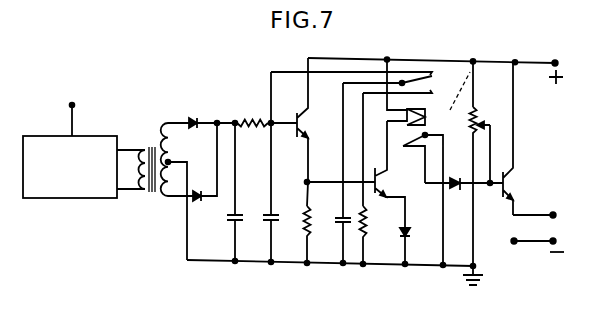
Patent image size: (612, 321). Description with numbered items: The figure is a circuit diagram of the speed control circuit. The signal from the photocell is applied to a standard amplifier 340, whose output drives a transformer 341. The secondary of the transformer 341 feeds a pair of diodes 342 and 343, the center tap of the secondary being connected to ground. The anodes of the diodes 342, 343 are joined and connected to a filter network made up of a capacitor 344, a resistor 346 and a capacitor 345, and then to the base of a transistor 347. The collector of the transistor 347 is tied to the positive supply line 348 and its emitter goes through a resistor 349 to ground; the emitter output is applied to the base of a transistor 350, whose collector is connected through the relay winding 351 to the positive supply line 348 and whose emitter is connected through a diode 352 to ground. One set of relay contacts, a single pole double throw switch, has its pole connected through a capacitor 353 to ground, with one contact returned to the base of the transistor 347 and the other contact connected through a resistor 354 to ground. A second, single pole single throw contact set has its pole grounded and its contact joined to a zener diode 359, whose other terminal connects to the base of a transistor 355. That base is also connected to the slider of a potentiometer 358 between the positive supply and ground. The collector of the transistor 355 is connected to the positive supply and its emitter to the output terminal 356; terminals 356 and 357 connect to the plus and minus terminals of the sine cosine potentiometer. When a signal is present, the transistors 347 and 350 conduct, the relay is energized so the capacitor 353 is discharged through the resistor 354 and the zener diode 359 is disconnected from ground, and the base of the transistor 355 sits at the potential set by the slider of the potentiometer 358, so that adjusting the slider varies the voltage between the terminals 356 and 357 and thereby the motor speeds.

The amplifier 340 is at (67, 198).
The transformer 341 is at (150, 192).
The diode 342 is at (192, 120).
The diode 343 is at (206, 186).
The capacitor 344 is at (229, 217).
The capacitor 345 is at (265, 217).
The resistor 346 is at (262, 121).
The transistor 347 is at (303, 112).
The positive supply line 348 is at (435, 63).
The resistor 349 is at (303, 220).
The transistor 350 is at (389, 170).
The relay winding 351 is at (425, 117).
The diode 352 is at (412, 228).
The capacitor 353 is at (334, 219).
The resistor 354 is at (371, 215).
The transistor 355 is at (512, 176).
The output terminal 356 is at (551, 217).
The output terminal 357 is at (551, 243).
The potentiometer 358 is at (477, 126).
The zener diode 359 is at (458, 178).